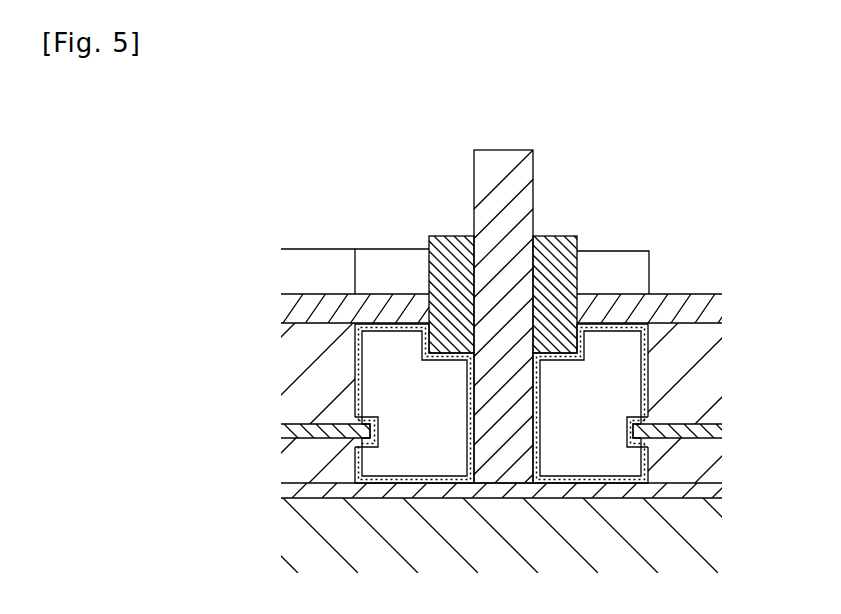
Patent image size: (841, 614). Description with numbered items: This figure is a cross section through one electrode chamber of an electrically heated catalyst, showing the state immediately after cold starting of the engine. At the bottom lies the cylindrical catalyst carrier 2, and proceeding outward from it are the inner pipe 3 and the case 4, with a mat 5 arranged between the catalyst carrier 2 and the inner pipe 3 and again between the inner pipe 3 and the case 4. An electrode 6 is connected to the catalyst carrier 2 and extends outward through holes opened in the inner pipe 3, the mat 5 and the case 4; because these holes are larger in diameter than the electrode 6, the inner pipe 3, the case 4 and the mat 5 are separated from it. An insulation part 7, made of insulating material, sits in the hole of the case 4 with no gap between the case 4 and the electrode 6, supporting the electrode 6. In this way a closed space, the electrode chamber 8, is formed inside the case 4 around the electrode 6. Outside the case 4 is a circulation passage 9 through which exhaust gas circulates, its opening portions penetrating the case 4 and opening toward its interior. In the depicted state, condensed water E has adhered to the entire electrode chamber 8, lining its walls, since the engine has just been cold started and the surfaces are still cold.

The catalyst carrier 2 is at (707, 538).
The inner pipe 3 is at (723, 432).
The case 4 is at (707, 310).
The mat 5 is at (707, 378).
The electrode 6 is at (508, 160).
The insulation part 7 is at (553, 243).
The electrode chamber 8 is at (392, 372).
The circulation passage 9 is at (398, 265).
The condensed water E is at (377, 432).